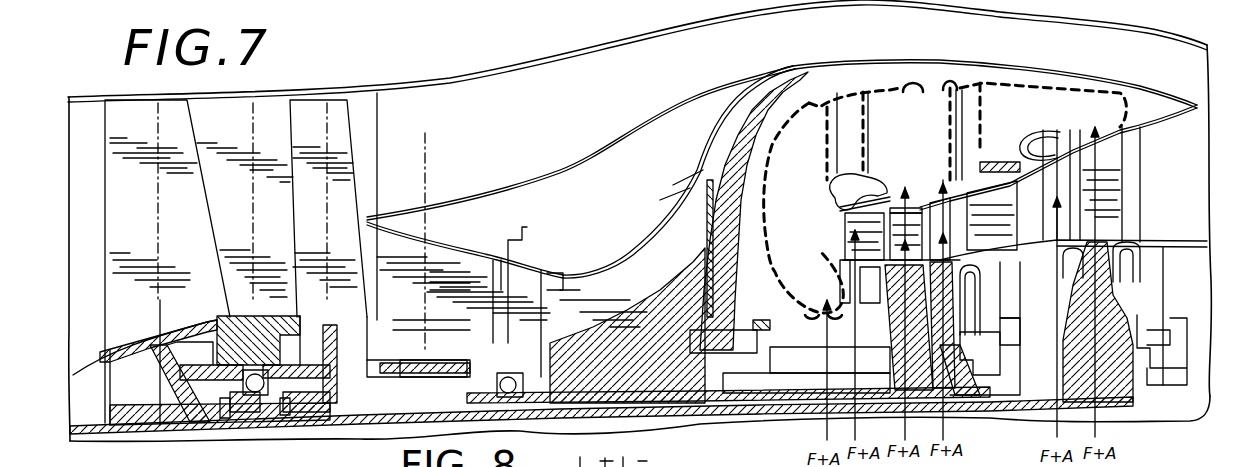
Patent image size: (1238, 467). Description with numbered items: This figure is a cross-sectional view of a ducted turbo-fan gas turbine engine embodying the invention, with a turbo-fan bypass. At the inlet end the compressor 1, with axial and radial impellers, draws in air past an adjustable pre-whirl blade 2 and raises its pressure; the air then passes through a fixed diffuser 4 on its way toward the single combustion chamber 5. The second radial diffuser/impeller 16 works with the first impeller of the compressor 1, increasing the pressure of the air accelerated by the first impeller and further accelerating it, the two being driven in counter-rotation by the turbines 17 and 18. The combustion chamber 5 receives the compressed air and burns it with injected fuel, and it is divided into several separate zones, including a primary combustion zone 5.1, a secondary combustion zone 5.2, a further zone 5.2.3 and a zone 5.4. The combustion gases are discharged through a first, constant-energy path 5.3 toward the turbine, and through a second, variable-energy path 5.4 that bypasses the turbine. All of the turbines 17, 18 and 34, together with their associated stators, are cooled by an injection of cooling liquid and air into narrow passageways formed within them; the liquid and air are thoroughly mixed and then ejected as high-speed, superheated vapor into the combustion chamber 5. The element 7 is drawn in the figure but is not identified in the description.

The compressor 1 is at (623, 267).
The adjustable pre-whirl blade 2 is at (502, 270).
The fixed diffuser 4 is at (790, 73).
The combustion chamber 5 is at (805, 176).
The primary combustion zone 5.1 is at (826, 293).
The secondary combustion zone 5.2 is at (924, 146).
The constant-energy path 5.3 is at (812, 226).
The variable-energy path 5.4 is at (1017, 153).
The combustion chamber zone 5.2.3 is at (1043, 118).
The turbine guide vane 7 is at (987, 186).
The second radial diffuser/impeller 16 is at (703, 144).
The turbine 17 is at (903, 205).
The turbine 18 is at (963, 217).
The turbine 34 is at (1110, 163).